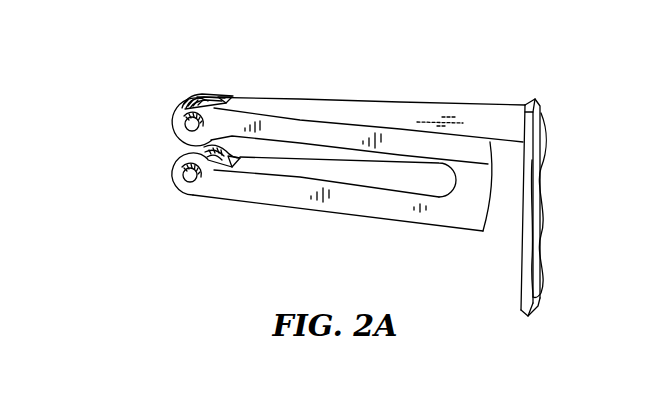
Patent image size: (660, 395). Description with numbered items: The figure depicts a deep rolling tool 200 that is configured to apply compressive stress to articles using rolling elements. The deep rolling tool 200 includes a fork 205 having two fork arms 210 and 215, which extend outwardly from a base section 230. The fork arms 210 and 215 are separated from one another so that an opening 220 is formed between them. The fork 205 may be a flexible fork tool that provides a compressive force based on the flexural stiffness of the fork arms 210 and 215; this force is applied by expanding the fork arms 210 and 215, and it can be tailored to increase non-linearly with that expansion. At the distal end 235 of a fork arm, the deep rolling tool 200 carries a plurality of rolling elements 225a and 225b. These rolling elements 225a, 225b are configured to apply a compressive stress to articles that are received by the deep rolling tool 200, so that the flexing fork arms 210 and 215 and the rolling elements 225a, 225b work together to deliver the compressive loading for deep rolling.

The deep rolling tool 200 is at (183, 73).
The fork 205 is at (518, 104).
The fork arm 210 is at (343, 108).
The fork arm 215 is at (287, 195).
The opening 220 is at (255, 146).
The rolling element 225a is at (172, 125).
The rolling element 225b is at (172, 178).
The base section 230 is at (494, 106).
The distal end 235 is at (218, 93).